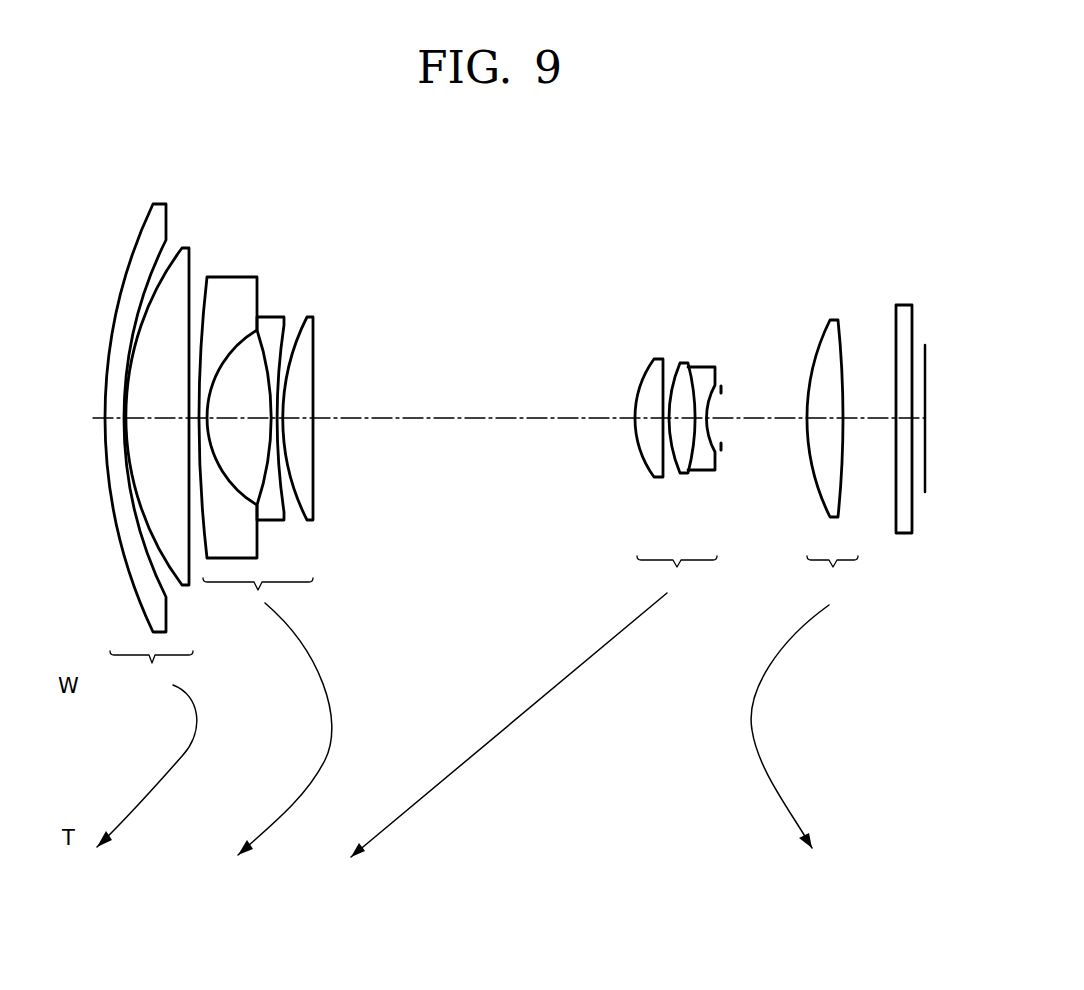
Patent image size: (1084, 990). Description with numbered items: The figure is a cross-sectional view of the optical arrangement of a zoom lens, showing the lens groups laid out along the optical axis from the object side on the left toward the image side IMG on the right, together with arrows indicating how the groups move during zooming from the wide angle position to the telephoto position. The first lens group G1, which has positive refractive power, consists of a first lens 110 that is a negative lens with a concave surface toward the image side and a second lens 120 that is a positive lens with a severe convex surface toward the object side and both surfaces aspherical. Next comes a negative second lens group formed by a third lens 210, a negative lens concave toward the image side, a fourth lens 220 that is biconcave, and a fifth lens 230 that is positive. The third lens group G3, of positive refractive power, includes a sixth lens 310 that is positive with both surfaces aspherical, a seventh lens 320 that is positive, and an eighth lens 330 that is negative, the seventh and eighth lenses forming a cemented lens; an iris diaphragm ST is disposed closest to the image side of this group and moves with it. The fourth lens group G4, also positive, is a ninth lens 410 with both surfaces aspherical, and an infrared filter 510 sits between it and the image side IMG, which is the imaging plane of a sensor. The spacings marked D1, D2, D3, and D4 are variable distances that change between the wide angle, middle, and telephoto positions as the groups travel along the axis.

The first lens 110 is at (158, 203).
The second lens 120 is at (183, 247).
The third lens 210 is at (233, 277).
The fourth lens 220 is at (277, 315).
The fifth lens 230 is at (310, 315).
The sixth lens 310 is at (655, 359).
The seventh lens 320 is at (683, 362).
The eighth lens 330 is at (708, 365).
The ninth lens 410 is at (831, 319).
The infrared filter 510 is at (900, 305).
The iris diaphragm ST is at (722, 389).
The image side IMG is at (927, 345).
The first lens group G1 is at (168, 675).
The third lens group G3 is at (460, 590).
The fourth lens group G4 is at (848, 593).
The variable distance D1 is at (189, 585).
The variable distance D2 is at (472, 418).
The variable distance D3 is at (753, 420).
The variable distance D4 is at (867, 418).